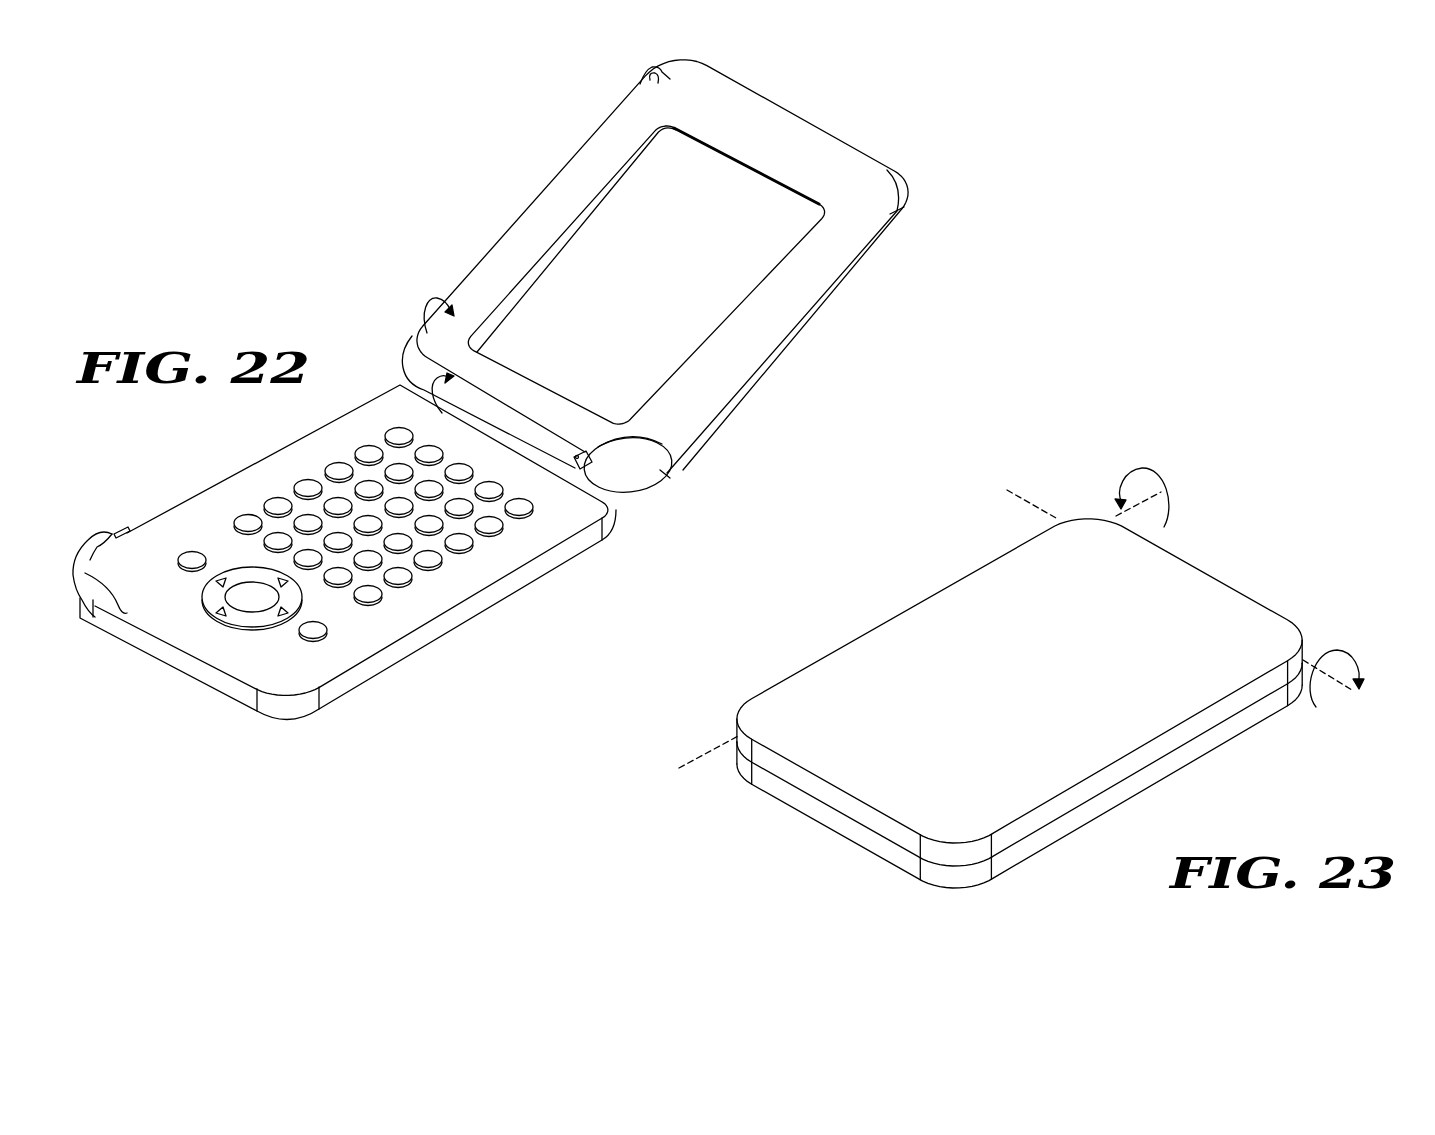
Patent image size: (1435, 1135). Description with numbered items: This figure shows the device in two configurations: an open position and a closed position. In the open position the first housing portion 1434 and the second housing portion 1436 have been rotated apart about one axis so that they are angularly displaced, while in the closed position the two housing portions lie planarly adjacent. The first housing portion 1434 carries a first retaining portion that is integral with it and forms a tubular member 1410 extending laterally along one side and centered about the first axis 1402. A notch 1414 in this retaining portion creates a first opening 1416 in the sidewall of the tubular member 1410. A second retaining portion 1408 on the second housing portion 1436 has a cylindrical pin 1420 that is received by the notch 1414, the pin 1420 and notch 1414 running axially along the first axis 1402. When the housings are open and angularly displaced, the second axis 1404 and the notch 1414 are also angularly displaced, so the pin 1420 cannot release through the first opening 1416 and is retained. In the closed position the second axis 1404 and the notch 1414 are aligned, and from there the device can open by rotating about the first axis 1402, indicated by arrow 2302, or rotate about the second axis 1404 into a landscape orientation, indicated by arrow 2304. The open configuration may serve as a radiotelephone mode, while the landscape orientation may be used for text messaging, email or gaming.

In FIG. 23, the first axis 1402 is at (1030, 505).
In FIG. 23, the second axis 1404 is at (699, 755).
In FIG. 22, the second retaining portion 1408 is at (625, 482).
In FIG. 22, the tubular member 1410 is at (480, 400).
In FIG. 22, the notch 1414 is at (573, 453).
In FIG. 22, the first opening 1416 is at (590, 452).
In FIG. 22, the pin 1420 is at (600, 443).
In FIG. 22, the first housing portion 1434 is at (468, 627).
In FIG. 23, the first housing portion 1434 is at (1168, 778).
In FIG. 22, the second housing portion 1436 is at (761, 367).
In FIG. 23, the second housing portion 1436 is at (906, 608).
In FIG. 23, the arrow 2302 is at (1345, 652).
In FIG. 23, the arrow 2304 is at (1151, 486).